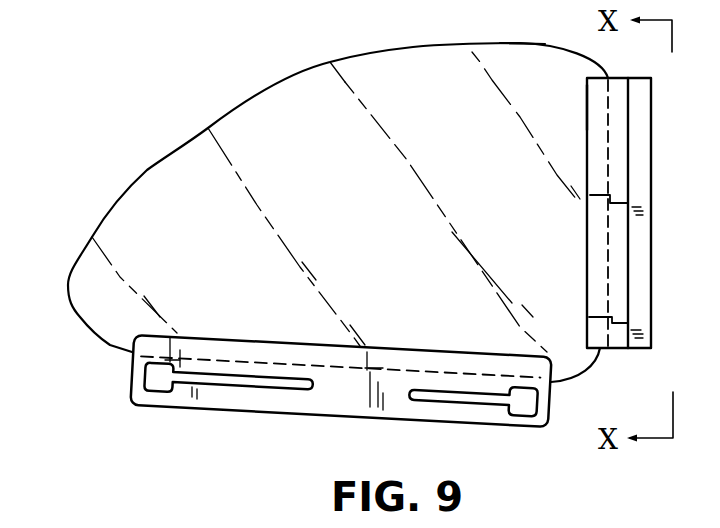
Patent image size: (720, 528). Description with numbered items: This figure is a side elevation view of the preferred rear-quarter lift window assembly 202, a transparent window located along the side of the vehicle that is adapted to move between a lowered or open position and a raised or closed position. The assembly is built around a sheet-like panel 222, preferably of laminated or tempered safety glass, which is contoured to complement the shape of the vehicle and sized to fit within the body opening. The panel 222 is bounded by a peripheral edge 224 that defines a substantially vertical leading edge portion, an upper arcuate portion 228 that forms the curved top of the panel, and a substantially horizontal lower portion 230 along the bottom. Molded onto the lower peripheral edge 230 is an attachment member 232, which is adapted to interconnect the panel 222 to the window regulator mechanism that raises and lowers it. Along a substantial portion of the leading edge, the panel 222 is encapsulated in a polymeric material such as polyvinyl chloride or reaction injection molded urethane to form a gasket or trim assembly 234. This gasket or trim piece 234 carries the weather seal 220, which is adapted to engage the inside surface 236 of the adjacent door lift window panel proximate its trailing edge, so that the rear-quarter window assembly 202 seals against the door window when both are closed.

The rear-quarter lift window assembly 202 is at (121, 157).
The weather seal 220 is at (655, 132).
The sheet-like panel 222 is at (353, 227).
The peripheral edge 224 is at (522, 72).
The upper arcuate portion 228 is at (355, 60).
The lower portion 230 is at (383, 368).
The attachment member 232 is at (430, 358).
The gasket or trim assembly 234 is at (592, 100).
The inner surface 236 is at (605, 143).